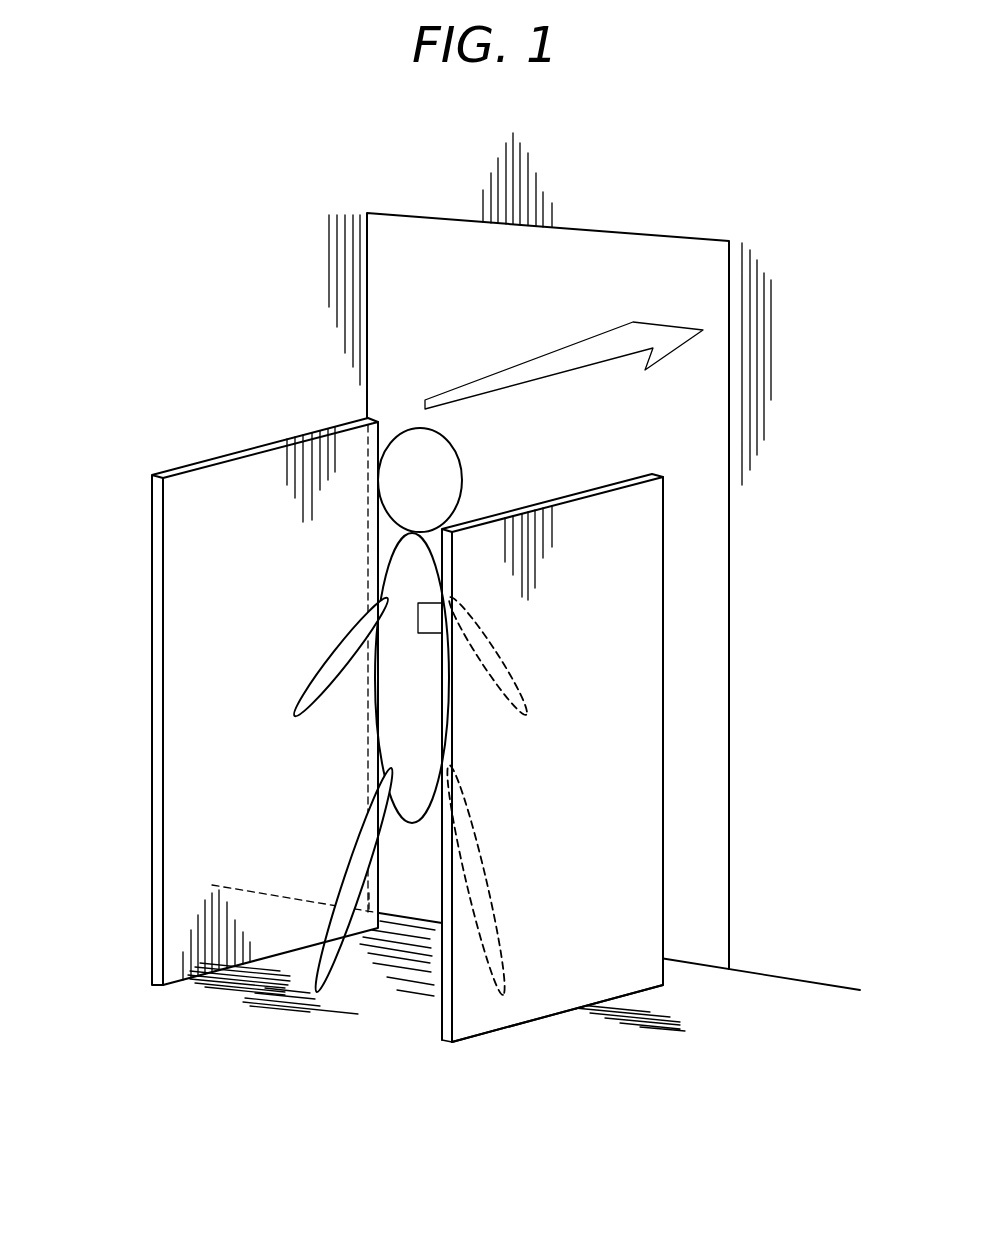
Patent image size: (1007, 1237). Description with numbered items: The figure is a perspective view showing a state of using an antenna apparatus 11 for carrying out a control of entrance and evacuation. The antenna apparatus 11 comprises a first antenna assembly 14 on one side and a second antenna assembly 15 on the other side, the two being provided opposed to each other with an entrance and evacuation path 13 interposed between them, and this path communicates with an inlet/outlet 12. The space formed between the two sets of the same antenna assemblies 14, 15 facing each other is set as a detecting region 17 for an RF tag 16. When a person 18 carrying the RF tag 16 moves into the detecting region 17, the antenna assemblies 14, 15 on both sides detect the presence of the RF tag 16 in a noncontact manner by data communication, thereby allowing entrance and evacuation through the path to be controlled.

The antenna apparatus 11 is at (262, 222).
The inlet/outlet 12 is at (731, 617).
The entrance and evacuation path 13 is at (251, 1058).
The first antenna assembly 14 is at (206, 462).
The second antenna assembly 15 is at (663, 508).
The RF tag 16 is at (422, 618).
The detecting region 17 is at (218, 772).
The person 18 is at (402, 572).